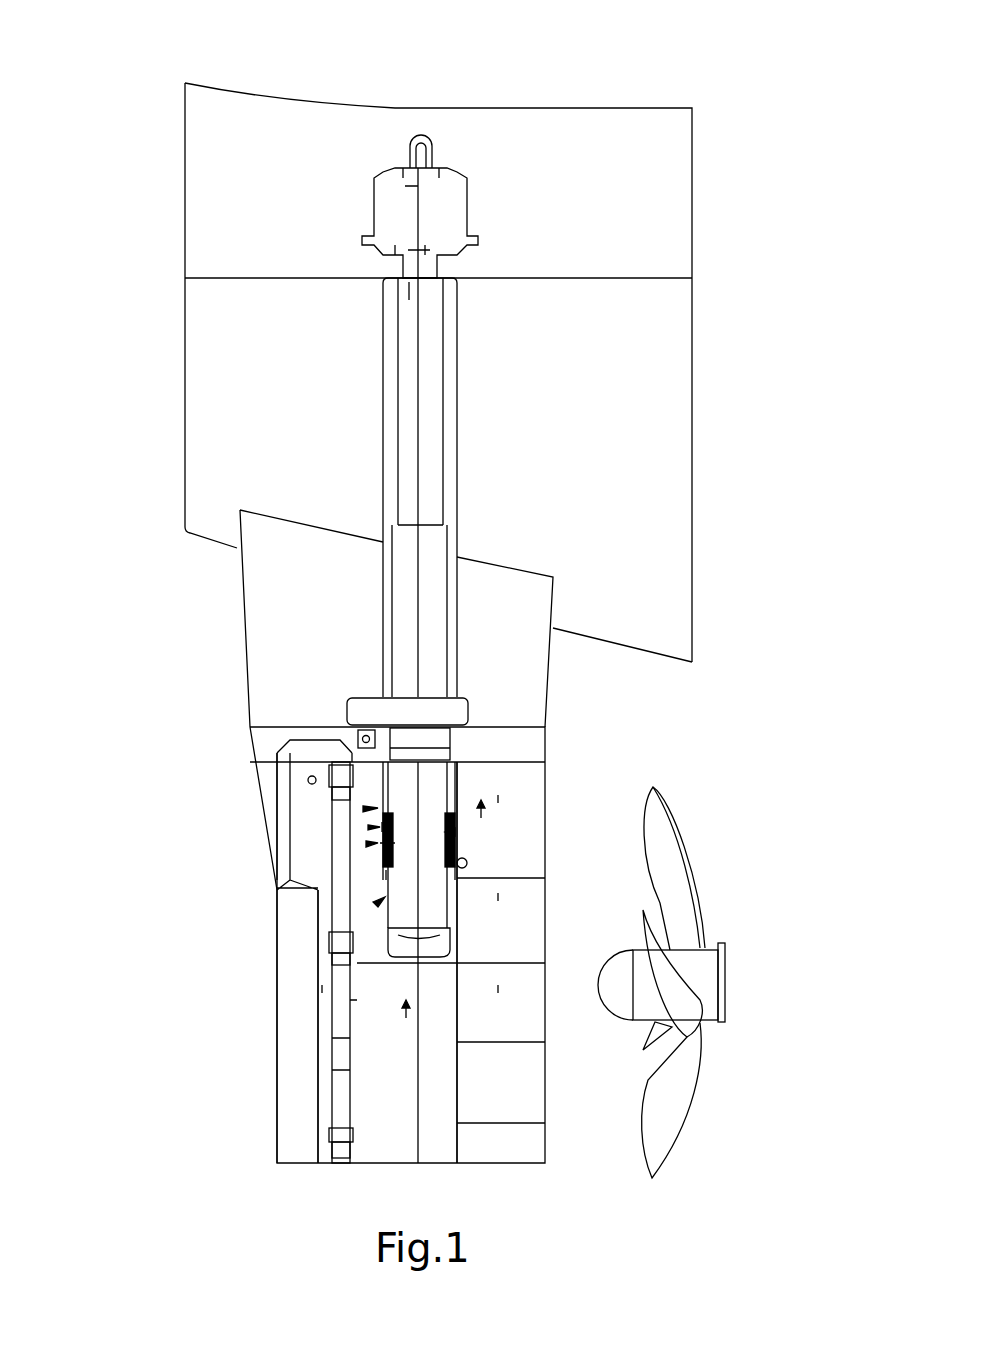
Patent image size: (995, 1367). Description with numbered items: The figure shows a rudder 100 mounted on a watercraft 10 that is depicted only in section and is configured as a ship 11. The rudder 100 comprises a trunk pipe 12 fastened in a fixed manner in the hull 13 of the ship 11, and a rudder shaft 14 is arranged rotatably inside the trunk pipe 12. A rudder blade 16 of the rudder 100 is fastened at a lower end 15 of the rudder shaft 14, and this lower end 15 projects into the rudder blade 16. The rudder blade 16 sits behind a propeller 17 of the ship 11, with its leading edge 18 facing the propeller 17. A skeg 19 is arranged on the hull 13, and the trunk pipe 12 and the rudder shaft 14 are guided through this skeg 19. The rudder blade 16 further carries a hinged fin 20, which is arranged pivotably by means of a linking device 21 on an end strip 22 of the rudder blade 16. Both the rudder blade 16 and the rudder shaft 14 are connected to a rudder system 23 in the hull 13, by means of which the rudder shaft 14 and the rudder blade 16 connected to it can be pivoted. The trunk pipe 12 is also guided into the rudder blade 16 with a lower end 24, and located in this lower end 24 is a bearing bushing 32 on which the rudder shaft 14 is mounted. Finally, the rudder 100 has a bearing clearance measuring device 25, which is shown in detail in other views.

The rudder 100 is at (826, 456).
The watercraft 10 is at (698, 348).
The ship 11 is at (698, 395).
The trunk pipe 12 is at (390, 483).
The hull 13 is at (655, 657).
The rudder shaft 14 is at (405, 618).
The lower end 15 is at (378, 902).
The rudder blade 16 is at (482, 1168).
The propeller 17 is at (690, 1103).
The leading edge 18 is at (545, 1015).
The skeg 19 is at (550, 670).
The hinged fin 20 is at (273, 1067).
The linking device 21 is at (333, 733).
The end strip 22 is at (350, 1070).
The rudder system 23 is at (480, 190).
The lower end 24 is at (365, 809).
The bearing clearance measuring device 25 is at (370, 828).
The bearing bushing 32 is at (368, 844).